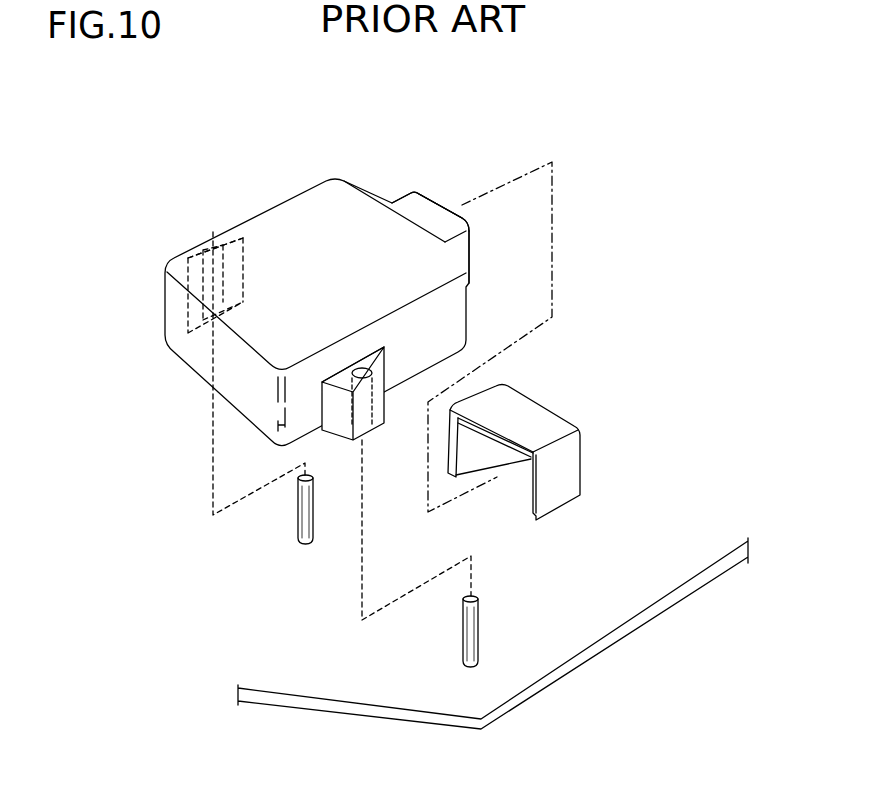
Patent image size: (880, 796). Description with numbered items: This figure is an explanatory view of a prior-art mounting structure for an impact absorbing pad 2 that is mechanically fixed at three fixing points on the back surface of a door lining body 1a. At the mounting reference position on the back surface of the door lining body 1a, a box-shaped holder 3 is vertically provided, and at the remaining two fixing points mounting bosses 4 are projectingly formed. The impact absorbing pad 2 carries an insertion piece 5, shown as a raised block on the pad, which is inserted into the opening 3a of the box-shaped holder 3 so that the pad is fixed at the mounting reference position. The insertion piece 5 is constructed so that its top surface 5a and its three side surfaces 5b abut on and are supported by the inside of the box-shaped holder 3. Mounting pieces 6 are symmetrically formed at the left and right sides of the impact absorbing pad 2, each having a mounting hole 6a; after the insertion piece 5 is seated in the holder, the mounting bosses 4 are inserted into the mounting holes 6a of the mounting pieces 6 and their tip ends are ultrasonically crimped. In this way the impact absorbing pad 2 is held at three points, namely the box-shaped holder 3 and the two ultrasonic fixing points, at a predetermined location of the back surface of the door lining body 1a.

The door lining body 1a is at (582, 635).
The impact absorbing pad 2 is at (167, 285).
The box-shaped holder 3 is at (524, 431).
The opening 3a is at (510, 470).
The mounting boss 4 is at (305, 518).
The insertion piece 5 is at (409, 188).
The top surface 5a is at (432, 210).
The side surface 5b is at (470, 249).
The mounting piece 6 is at (212, 248).
The mounting hole 6a is at (212, 234).